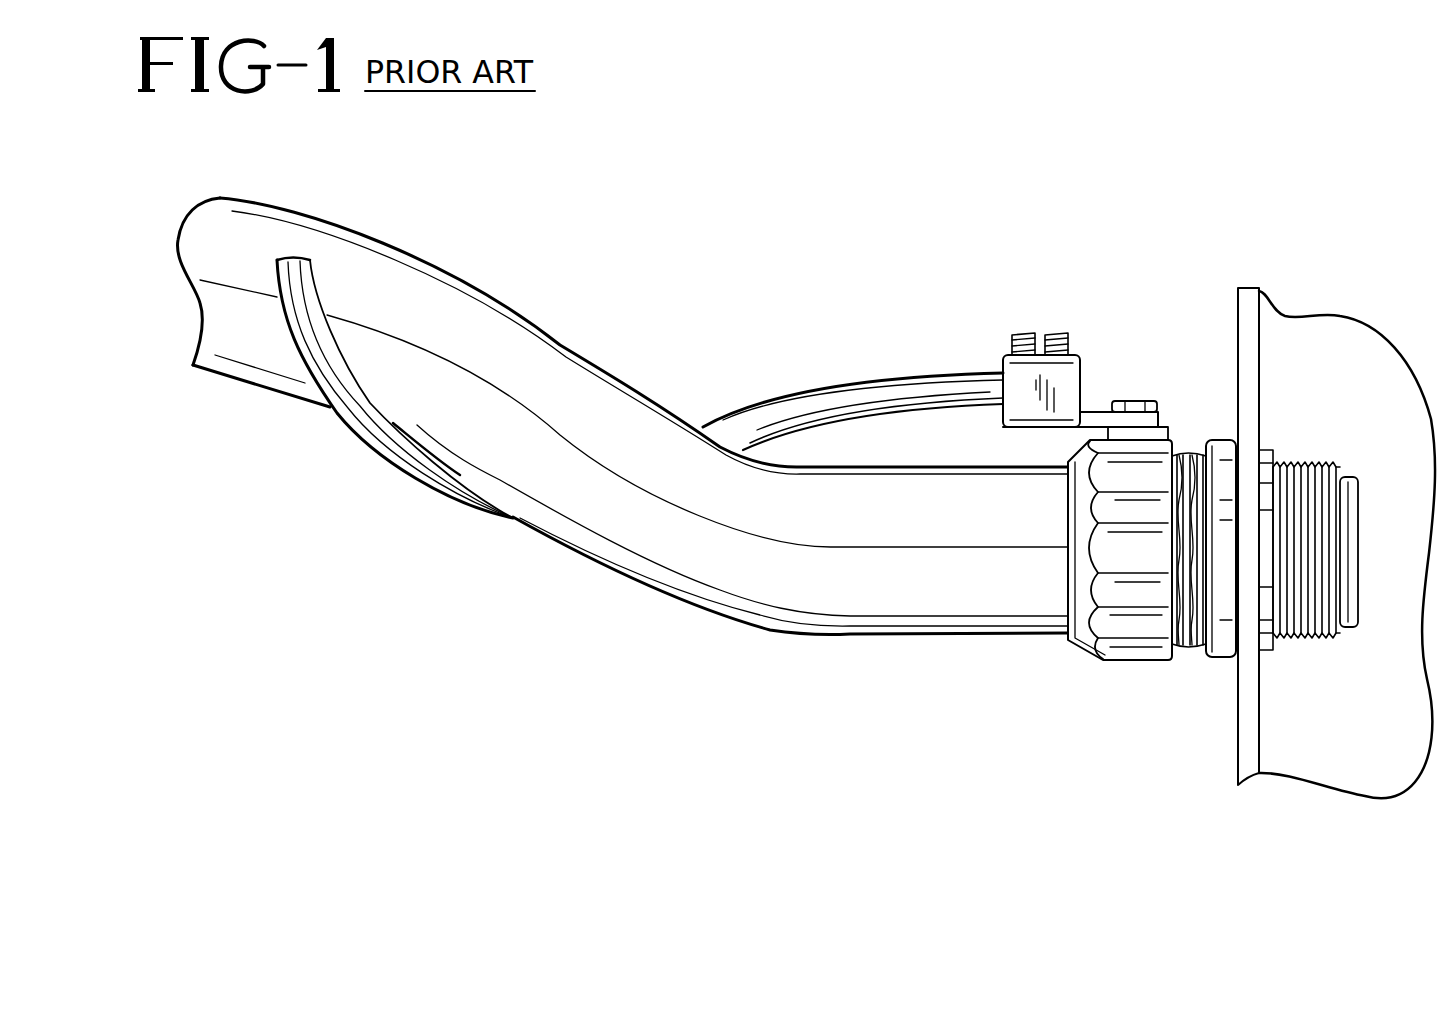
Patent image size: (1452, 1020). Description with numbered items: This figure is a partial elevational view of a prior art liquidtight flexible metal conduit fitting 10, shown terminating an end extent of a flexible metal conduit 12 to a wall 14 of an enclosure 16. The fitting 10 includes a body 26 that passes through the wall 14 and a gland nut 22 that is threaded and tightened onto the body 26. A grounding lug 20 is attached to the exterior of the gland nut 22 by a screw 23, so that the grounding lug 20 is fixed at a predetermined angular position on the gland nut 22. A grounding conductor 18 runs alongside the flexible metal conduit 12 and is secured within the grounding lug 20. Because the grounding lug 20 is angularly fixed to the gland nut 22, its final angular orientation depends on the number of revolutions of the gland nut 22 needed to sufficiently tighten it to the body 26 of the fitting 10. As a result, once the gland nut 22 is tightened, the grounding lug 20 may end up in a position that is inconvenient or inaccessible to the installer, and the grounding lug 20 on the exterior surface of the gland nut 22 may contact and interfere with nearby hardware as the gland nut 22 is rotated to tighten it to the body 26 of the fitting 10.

The liquidtight flexible metal conduit fitting 10 is at (1008, 684).
The flexible metal conduit 12 is at (570, 350).
The wall 14 is at (1238, 763).
The enclosure 16 is at (1308, 362).
The grounding conductor 18 is at (807, 391).
The grounding lug 20 is at (1080, 374).
The gland nut 22 is at (1117, 663).
The screw 23 is at (1137, 402).
The body 26 is at (1183, 650).